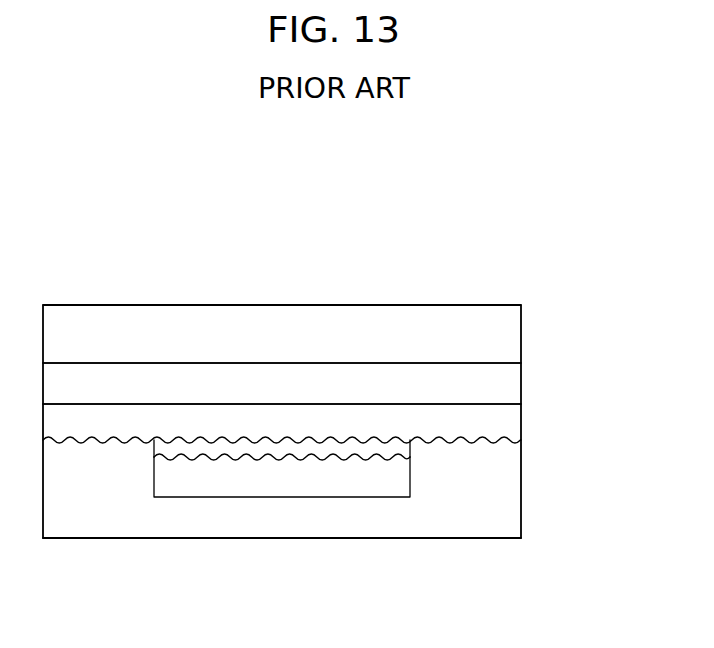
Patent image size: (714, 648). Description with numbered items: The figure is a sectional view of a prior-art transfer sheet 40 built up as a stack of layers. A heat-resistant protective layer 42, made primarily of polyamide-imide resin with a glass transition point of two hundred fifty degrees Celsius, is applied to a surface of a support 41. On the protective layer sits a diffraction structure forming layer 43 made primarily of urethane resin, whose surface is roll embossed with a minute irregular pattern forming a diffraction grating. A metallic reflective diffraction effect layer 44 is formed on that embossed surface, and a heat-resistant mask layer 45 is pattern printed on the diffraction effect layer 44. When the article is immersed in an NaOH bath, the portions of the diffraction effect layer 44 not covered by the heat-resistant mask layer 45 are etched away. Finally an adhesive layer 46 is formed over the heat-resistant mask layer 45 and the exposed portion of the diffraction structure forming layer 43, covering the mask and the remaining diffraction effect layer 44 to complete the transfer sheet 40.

The transfer sheet 40 is at (510, 254).
The support 41 is at (349, 323).
The heat-resistant protective layer 42 is at (509, 386).
The diffraction structure forming layer 43 is at (509, 424).
The diffraction effect layer 44 is at (203, 448).
The heat-resistant mask layer 45 is at (319, 482).
The adhesive layer 46 is at (423, 528).